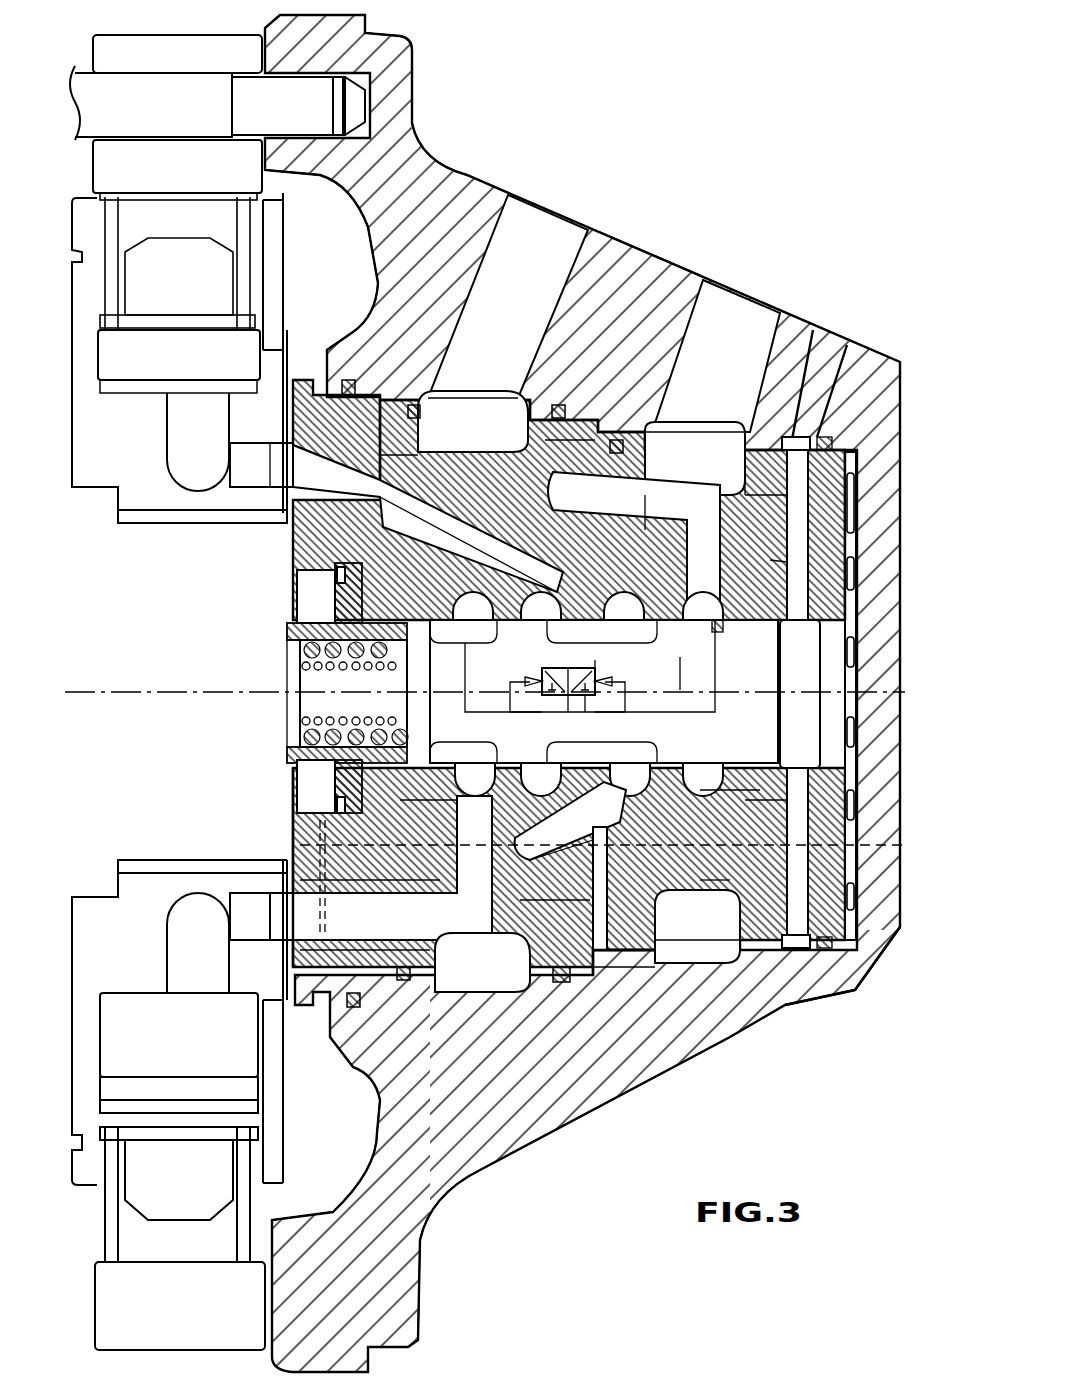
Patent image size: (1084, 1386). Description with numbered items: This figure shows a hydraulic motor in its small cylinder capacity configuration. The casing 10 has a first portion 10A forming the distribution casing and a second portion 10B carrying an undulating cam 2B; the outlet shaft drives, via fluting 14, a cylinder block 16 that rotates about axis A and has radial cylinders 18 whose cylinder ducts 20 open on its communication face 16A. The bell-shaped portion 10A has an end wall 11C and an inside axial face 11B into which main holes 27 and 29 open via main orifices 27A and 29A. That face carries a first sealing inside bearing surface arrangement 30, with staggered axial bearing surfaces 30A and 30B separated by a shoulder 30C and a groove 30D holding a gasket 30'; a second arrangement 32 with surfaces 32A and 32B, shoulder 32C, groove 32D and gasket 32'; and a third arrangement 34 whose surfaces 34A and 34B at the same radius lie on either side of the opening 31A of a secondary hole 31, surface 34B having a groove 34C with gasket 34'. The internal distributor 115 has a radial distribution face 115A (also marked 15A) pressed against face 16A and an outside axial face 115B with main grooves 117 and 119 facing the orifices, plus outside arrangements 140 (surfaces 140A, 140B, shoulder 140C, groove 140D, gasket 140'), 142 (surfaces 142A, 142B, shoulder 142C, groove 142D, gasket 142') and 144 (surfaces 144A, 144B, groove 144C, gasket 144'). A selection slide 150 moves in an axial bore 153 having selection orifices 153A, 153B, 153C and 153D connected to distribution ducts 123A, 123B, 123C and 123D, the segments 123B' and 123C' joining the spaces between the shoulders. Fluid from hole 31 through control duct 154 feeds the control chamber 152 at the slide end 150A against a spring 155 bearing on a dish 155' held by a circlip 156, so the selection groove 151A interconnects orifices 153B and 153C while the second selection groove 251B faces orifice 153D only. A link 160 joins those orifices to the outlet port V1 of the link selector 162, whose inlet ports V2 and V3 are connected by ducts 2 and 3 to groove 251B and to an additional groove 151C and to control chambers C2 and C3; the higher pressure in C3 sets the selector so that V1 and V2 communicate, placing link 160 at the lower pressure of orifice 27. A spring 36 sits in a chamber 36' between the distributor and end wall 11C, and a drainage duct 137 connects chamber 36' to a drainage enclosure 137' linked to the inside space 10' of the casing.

The casing 10 is at (582, 693).
The first portion of the casing 10A is at (662, 258).
The second portion of the casing 10B is at (158, 45).
The inside space of the casing 10' is at (321, 260).
The duct 2 is at (462, 696).
The undulating cam 2B is at (210, 200).
The duct 3 is at (720, 692).
The inside axial face 11B is at (712, 888).
The end wall 11C is at (892, 535).
The fluting 14 is at (150, 573).
The shaft end 15A is at (298, 442).
The cylinder block 16 is at (125, 445).
The communication face 16A is at (314, 520).
The radial cylinders 18 is at (185, 355).
The cylinder ducts 20 is at (250, 470).
The first main hole 27 is at (532, 287).
The first main orifice 27A is at (500, 395).
The second main hole 29 is at (740, 350).
The second main orifice 29A is at (676, 424).
The first sealing inside bearing surface arrangement 30 is at (396, 517).
The sealing gasket 30' is at (355, 367).
The axial bearing surface 30A is at (336, 430).
The axial bearing surface 30B is at (473, 421).
The shoulder 30C is at (405, 449).
The annular groove 30D is at (414, 404).
The secondary hole 31 is at (797, 430).
The opening of the secondary hole 31A is at (790, 448).
The second sealing inside bearing surface arrangement 32 is at (607, 537).
The gasket 32' is at (558, 382).
The first axial bearing surface 32A is at (542, 461).
The second axial bearing surface 32B is at (695, 458).
The shoulder 32C is at (606, 450).
The annular groove 32D is at (604, 430).
The third sealing inside bearing surface arrangement 34 is at (782, 535).
The gasket 34' is at (837, 439).
The sealing axial surface 34A is at (757, 505).
The sealing axial surface 34B is at (847, 462).
The annular groove 34C is at (822, 432).
The spring 36 is at (888, 696).
The chamber 36' is at (893, 691).
The internal distributor 115 is at (474, 502).
The radial distribution face 115A is at (292, 832).
The outside axial face 115B is at (606, 972).
The main groove 117 is at (503, 987).
The main groove 119 is at (740, 939).
The distribution duct 123A is at (648, 508).
The distribution duct 123B is at (561, 864).
The duct segment 123B' is at (570, 821).
The distribution duct 123C is at (468, 544).
The duct segment 123C' is at (459, 526).
The distribution duct 123D is at (326, 925).
The drainage duct 137 is at (622, 844).
The drainage enclosure 137' is at (288, 776).
The sealing outside bearing surface arrangement 140 is at (386, 1024).
The sealing gasket 140' is at (389, 868).
The axial bearing surface 140A is at (365, 963).
The axial bearing surface 140B is at (482, 962).
The shoulder 140C is at (400, 1012).
The groove 140D is at (412, 994).
The sealing outside bearing surface arrangement 142 is at (592, 1017).
The gasket 142' is at (697, 926).
The axial bearing surface 142A is at (563, 984).
The axial bearing surface 142B is at (625, 888).
The shoulder 142C is at (555, 915).
The groove 142D is at (642, 958).
The third sealing outside bearing surface arrangement 144 is at (751, 888).
The sealing gasket 144' is at (820, 1013).
The sealing axial bearing surface 144A is at (780, 933).
The sealing axial bearing surface 144B is at (846, 988).
The groove 144C is at (805, 950).
The selection slide 150 is at (772, 737).
The end of the selection slide 150A is at (472, 766).
The selection groove 151A is at (632, 765).
The additional groove 151C is at (720, 634).
The control chamber 152 is at (822, 729).
The axial bore 153 is at (752, 778).
The selection orifice 153A is at (705, 617).
The selection orifice 153B is at (612, 612).
The selection orifice 153C is at (541, 592).
The selection orifice 153D is at (462, 606).
The control duct 154 is at (757, 561).
The spring 155 is at (309, 678).
The dish 155' is at (255, 645).
The circlip 156 is at (356, 586).
The link 160 is at (585, 668).
The link selector 162 is at (681, 660).
The wall 251B is at (457, 802).
The axis of rotation A is at (178, 690).
The control chamber C2 is at (528, 680).
The control chamber C3 is at (680, 660).
The outlet port V1 is at (590, 680).
The inlet port V2 is at (572, 697).
The inlet port V3 is at (588, 698).